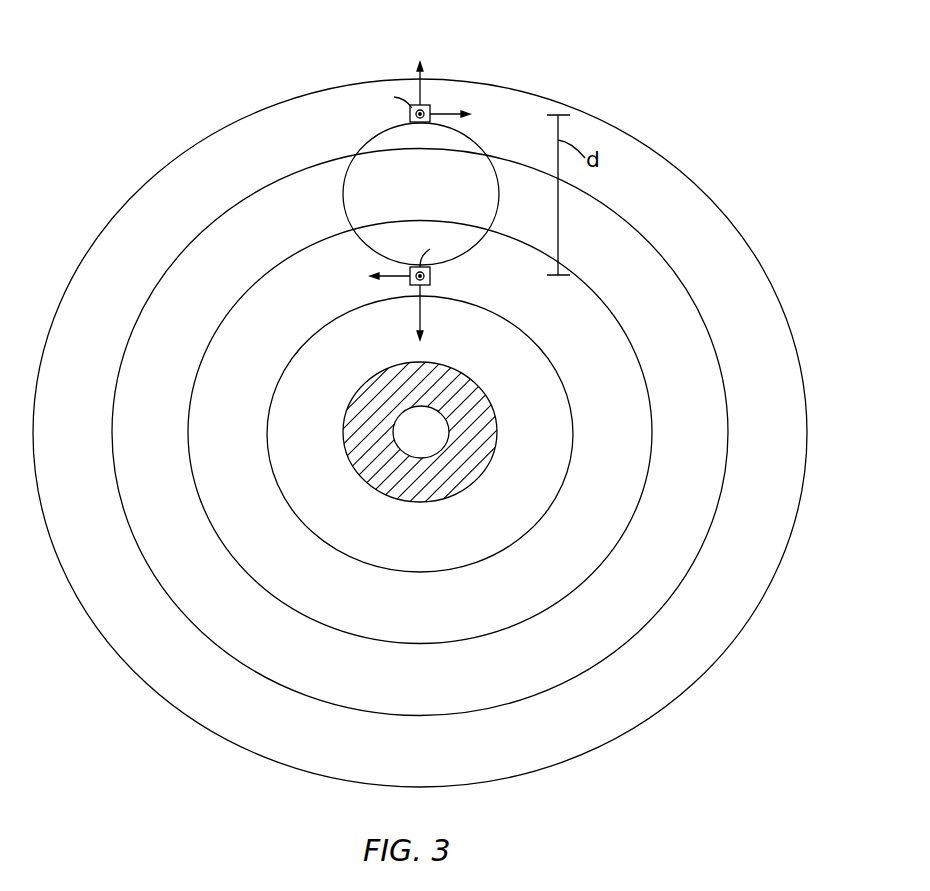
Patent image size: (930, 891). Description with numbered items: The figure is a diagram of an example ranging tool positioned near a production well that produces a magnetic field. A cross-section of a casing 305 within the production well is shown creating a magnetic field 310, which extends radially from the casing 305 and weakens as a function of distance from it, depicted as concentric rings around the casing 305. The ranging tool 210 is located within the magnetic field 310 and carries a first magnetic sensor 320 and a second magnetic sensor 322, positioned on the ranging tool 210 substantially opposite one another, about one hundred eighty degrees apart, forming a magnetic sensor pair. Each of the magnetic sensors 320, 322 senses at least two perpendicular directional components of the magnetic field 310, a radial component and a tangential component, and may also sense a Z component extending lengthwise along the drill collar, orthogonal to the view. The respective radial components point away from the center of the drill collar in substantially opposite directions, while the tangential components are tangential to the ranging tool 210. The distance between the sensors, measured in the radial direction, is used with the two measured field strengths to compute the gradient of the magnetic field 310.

The ranging tool 210 is at (375, 137).
The casing 305 is at (462, 492).
The magnetic field 310 is at (785, 556).
The first magnetic sensor 320 is at (430, 108).
The second magnetic sensor 322 is at (430, 272).